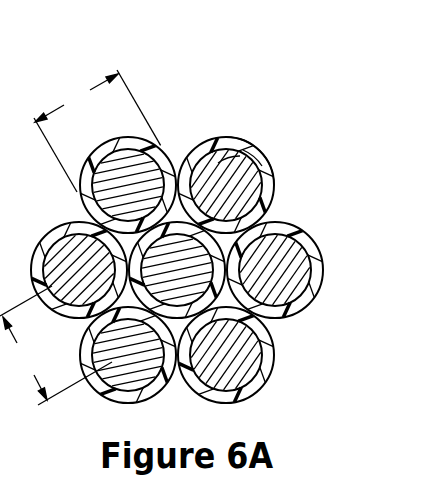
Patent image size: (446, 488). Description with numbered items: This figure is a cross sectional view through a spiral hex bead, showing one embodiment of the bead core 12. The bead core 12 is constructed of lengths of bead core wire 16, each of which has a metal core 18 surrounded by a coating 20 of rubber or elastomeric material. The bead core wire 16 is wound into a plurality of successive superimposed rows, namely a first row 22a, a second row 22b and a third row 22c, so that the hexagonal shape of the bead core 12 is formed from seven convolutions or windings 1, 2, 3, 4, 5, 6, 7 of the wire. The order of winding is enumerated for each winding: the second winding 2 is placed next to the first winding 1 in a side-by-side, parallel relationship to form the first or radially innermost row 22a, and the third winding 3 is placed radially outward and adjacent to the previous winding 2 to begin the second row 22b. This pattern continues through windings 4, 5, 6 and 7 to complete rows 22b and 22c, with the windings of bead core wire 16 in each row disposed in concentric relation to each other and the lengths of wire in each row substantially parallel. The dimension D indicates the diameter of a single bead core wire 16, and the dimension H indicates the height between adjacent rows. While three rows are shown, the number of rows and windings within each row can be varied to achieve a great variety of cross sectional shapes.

The first winding 1 is at (128, 355).
The second winding 2 is at (226, 355).
The third winding 3 is at (275, 270).
The fourth winding 4 is at (177, 270).
The fifth winding 5 is at (79, 270).
The sixth winding 6 is at (128, 185).
The seventh winding 7 is at (226, 185).
The bead core 12 is at (244, 108).
The bead core wire 16 is at (248, 140).
The metal core 18 is at (262, 165).
The coating 20 is at (218, 163).
The first row 22a is at (324, 353).
The second row 22b is at (355, 268).
The third row 22c is at (329, 183).
The strand diameter D is at (97, 131).
The row height H is at (56, 345).